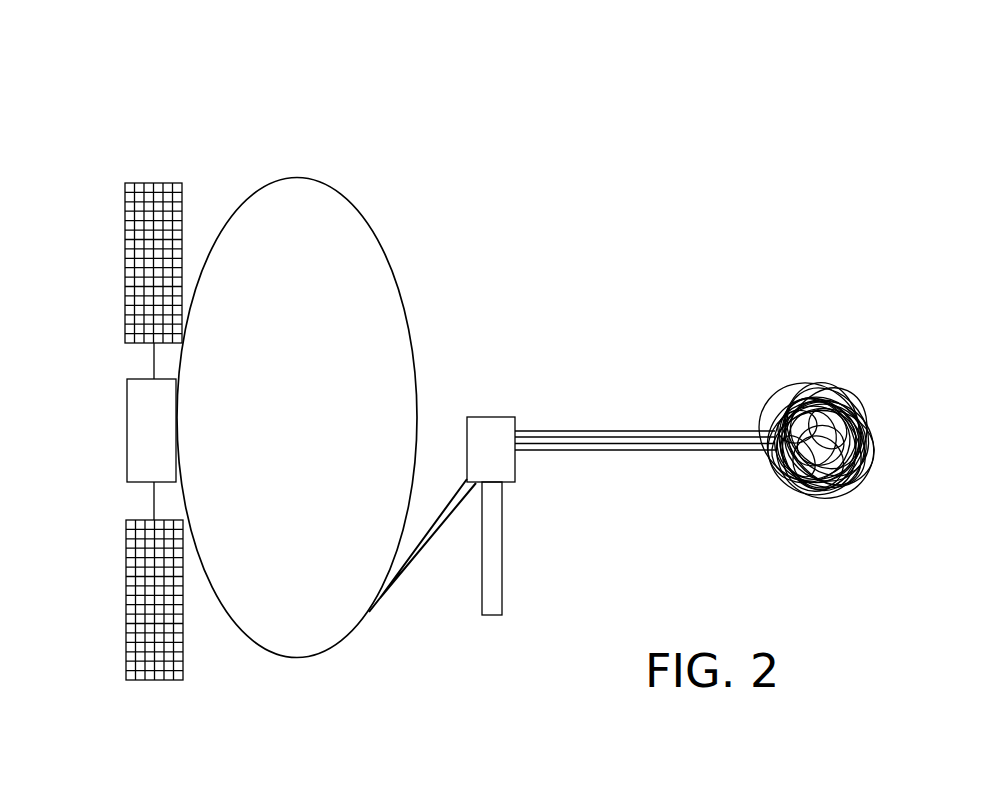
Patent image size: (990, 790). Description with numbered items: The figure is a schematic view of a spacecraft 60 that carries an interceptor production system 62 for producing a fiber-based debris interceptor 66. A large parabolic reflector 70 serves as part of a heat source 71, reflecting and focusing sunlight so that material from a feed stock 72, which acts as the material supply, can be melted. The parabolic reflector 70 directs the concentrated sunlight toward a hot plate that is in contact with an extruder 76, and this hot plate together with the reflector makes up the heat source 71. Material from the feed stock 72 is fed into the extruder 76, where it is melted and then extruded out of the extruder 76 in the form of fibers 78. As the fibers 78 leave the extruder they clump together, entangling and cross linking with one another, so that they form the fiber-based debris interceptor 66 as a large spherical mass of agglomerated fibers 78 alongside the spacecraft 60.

The spacecraft 60 is at (182, 77).
The interceptor production system 62 is at (492, 297).
The fiber-based debris interceptor 66 is at (837, 383).
The parabolic reflector 70 is at (332, 207).
The heat source 71 is at (423, 192).
The feed stock 72 is at (502, 543).
The extruder 76 is at (528, 397).
The fibers 78 is at (635, 428).